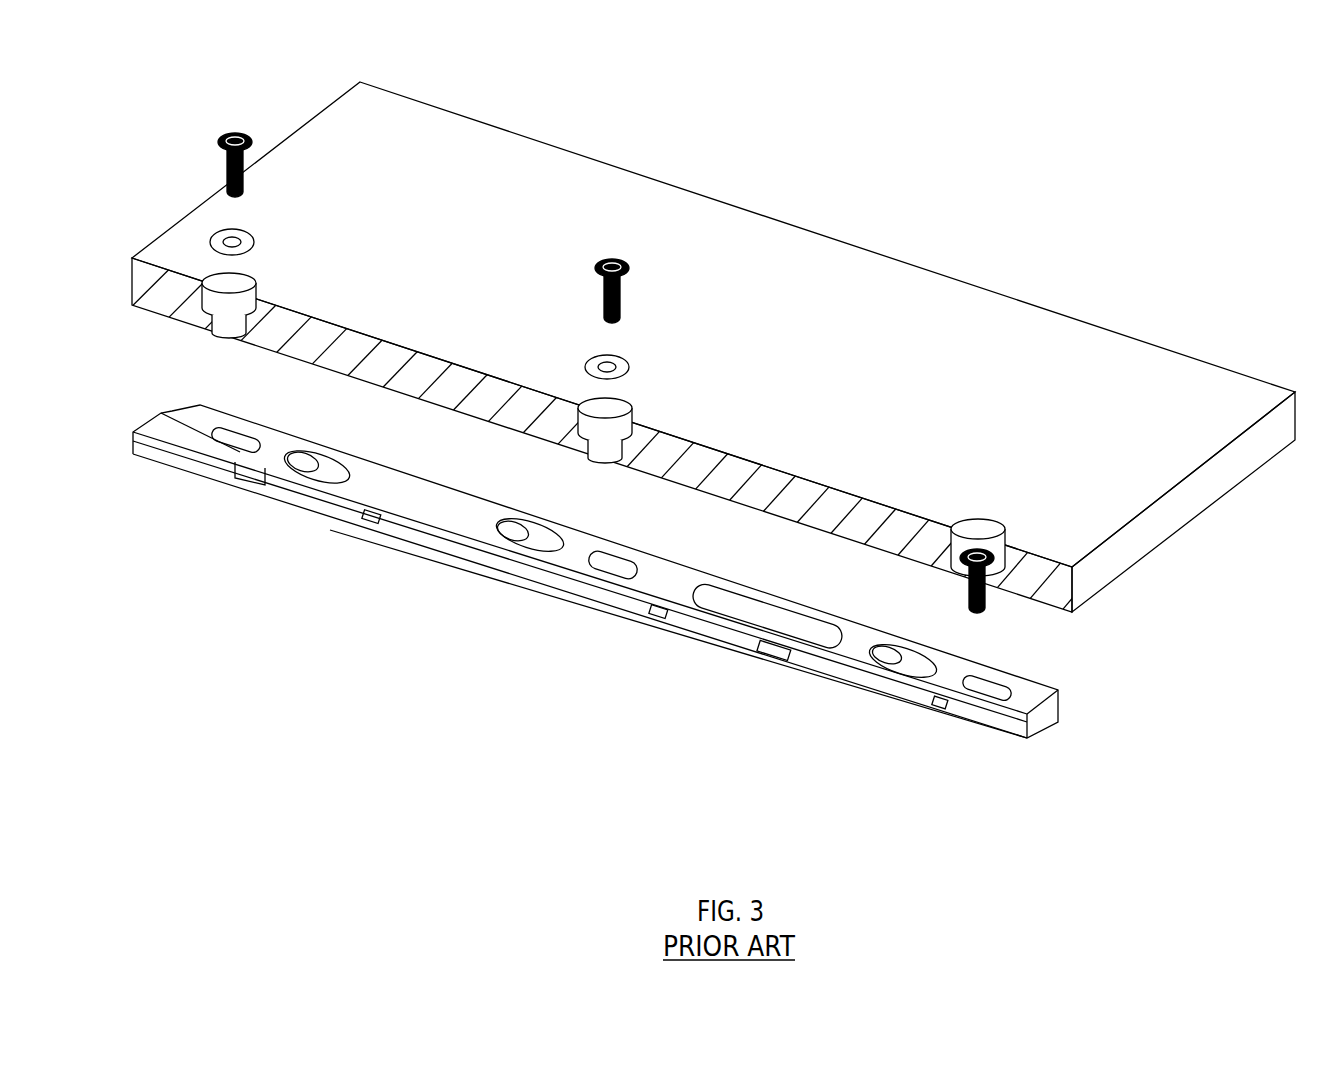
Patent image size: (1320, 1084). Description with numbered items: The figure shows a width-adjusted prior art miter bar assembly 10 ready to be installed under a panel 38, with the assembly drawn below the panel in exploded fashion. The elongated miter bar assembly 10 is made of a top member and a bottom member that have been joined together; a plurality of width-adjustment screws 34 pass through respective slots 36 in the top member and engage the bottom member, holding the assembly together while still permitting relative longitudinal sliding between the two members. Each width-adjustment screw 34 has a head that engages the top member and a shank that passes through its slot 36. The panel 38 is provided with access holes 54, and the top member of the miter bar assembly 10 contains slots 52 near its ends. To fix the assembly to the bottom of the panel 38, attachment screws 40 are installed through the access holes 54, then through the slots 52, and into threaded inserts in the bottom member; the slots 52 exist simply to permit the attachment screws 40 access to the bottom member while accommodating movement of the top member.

The miter bar assembly 10 is at (913, 698).
The width-adjustment screw 34 is at (512, 533).
The slot 36 is at (340, 482).
The panel 38 is at (1052, 308).
The attachment screw 40 is at (222, 132).
The slot 52 is at (258, 452).
The access hole 54 is at (257, 287).